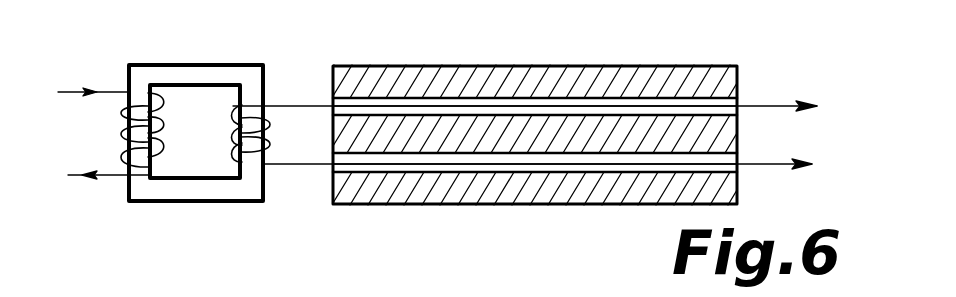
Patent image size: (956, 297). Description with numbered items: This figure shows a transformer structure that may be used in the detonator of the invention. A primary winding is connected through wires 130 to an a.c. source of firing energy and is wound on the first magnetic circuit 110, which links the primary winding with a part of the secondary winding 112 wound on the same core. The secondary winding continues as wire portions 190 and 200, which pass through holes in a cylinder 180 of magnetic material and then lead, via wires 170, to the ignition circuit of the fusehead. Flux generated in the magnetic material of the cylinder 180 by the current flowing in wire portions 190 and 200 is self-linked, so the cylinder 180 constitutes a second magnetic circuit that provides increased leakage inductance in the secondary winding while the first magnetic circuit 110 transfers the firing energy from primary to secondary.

The first magnetic circuit 110 is at (213, 63).
The secondary winding 112 is at (233, 107).
The wires 130 is at (72, 93).
The wires 170 is at (783, 110).
The cylinder of magnetic material 180 is at (560, 52).
The wire portion 190 is at (740, 98).
The wire portion 200 is at (740, 170).